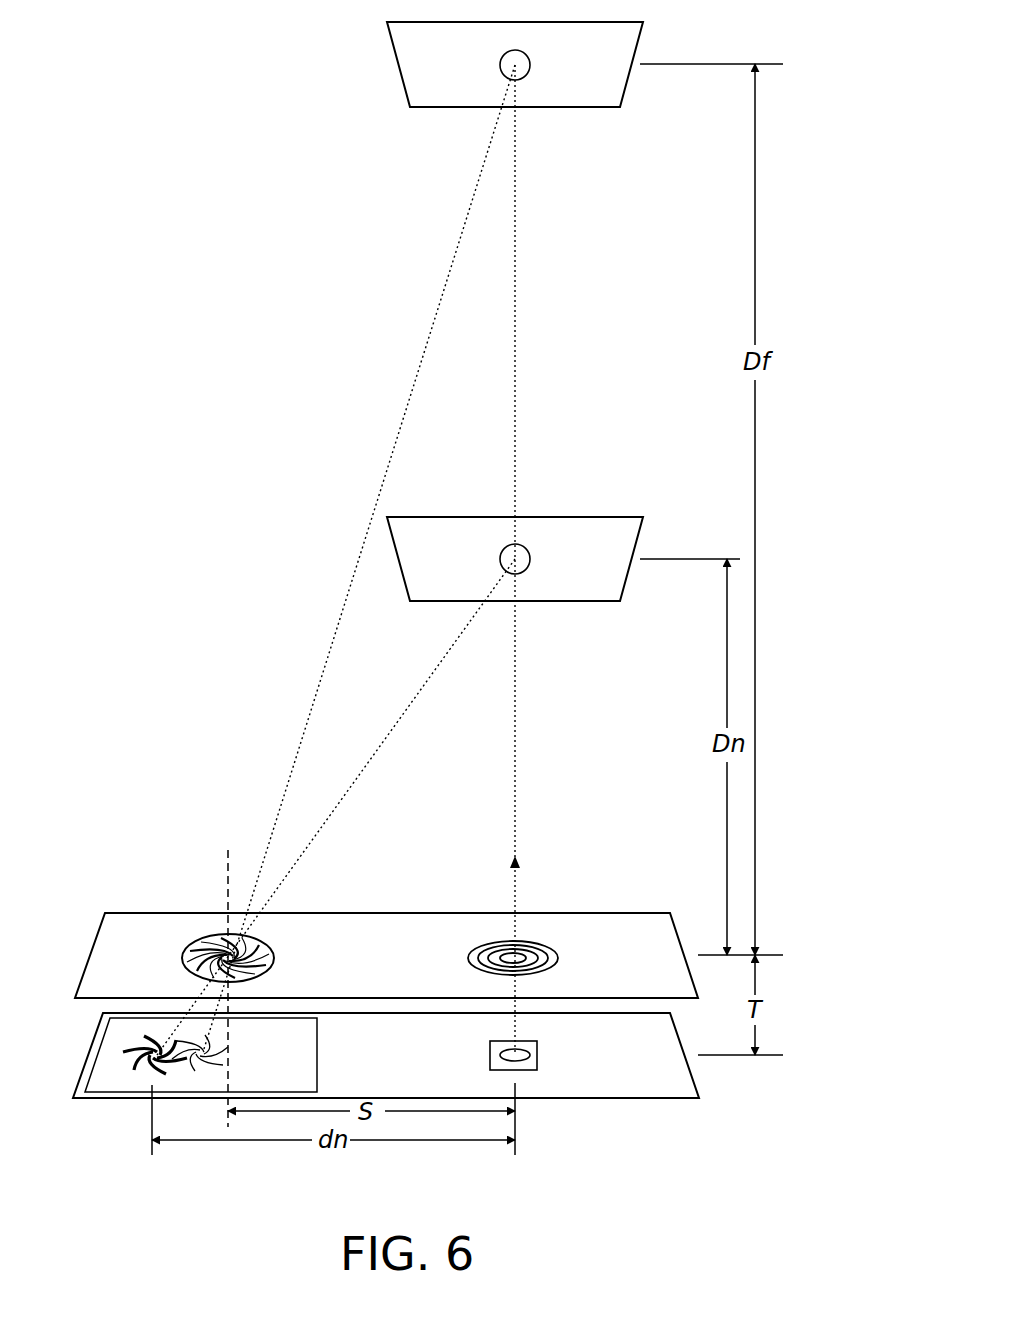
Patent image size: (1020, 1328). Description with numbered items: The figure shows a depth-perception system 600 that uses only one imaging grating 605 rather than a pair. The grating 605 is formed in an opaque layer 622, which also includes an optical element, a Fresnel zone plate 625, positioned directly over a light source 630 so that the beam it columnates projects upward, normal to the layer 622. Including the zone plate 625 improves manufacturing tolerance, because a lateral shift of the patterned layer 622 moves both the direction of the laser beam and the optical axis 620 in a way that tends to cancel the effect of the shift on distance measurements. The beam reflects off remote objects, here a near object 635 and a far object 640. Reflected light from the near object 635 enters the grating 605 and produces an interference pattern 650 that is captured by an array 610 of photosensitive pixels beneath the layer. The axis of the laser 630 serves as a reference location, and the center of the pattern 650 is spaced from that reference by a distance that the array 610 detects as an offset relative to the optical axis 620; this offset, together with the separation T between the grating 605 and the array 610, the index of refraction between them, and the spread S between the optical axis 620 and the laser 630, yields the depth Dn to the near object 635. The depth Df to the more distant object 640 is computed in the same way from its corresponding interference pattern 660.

The depth-perception system 600 is at (170, 128).
The imaging grating 605 is at (183, 957).
The array of photosensitive pixels 610 is at (291, 1050).
The optical axis 620 is at (225, 873).
The opaque layer 622 is at (403, 963).
The Fresnel zone plate 625 is at (553, 950).
The light source 630 is at (530, 1046).
The near object 635 is at (588, 552).
The far object 640 is at (588, 58).
The interference pattern 650 is at (150, 1079).
The interference pattern 660 is at (240, 1070).